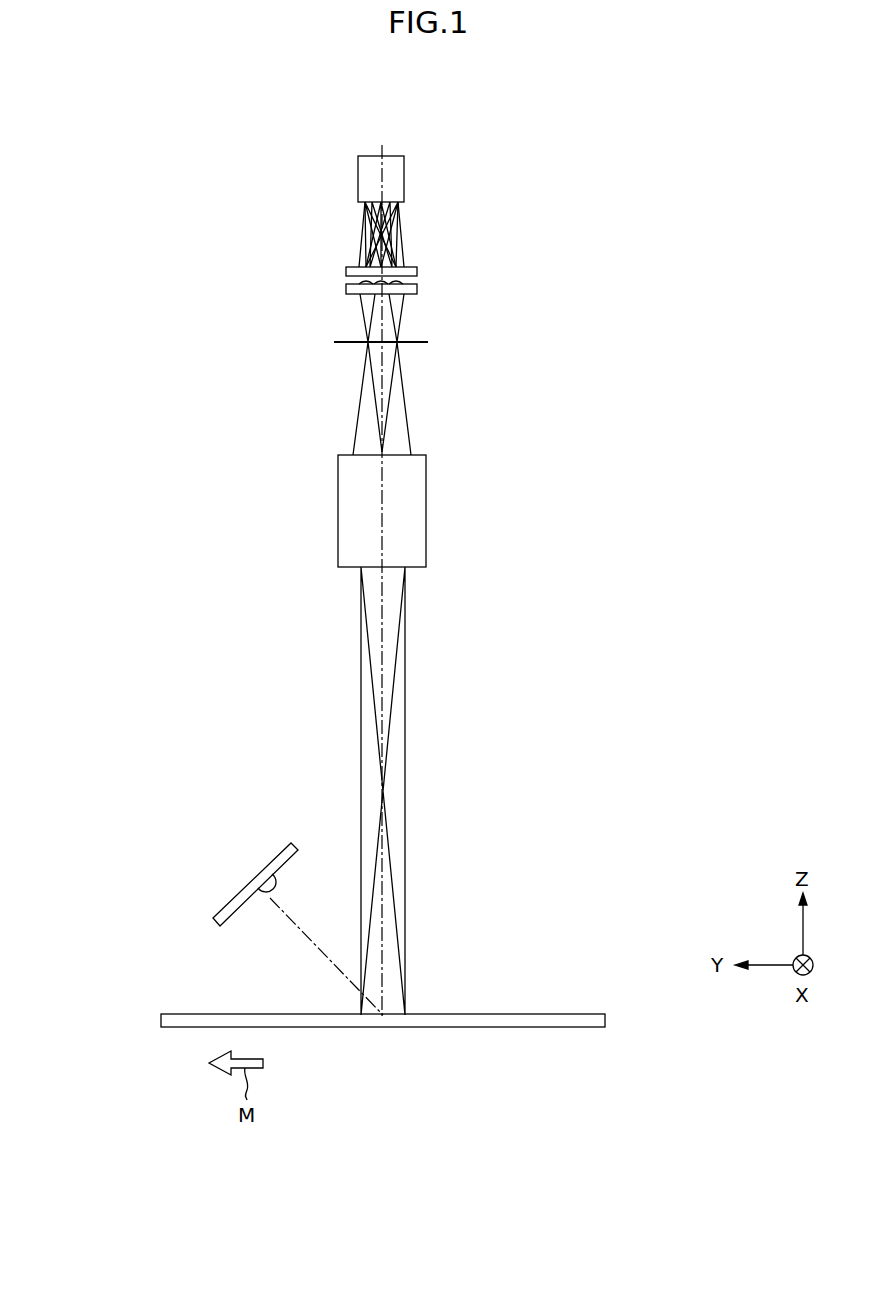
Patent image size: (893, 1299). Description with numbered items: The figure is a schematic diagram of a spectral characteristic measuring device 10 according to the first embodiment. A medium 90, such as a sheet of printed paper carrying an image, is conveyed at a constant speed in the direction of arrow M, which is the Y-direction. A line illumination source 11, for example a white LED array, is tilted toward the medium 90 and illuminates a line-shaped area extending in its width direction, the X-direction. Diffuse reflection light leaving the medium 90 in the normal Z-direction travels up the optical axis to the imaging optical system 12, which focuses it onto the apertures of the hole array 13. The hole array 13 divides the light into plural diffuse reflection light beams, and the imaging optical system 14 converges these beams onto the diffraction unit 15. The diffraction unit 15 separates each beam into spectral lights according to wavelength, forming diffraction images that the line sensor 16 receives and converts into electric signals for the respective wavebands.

The spectral characteristic measuring device 10 is at (86, 98).
The line illumination source 11 is at (250, 882).
The imaging optical system 12 is at (426, 512).
The hole array 13 is at (426, 342).
The imaging optical system 14 is at (417, 288).
The diffraction unit 15 is at (417, 271).
The line sensor 16 is at (404, 181).
The medium 90 is at (532, 1027).